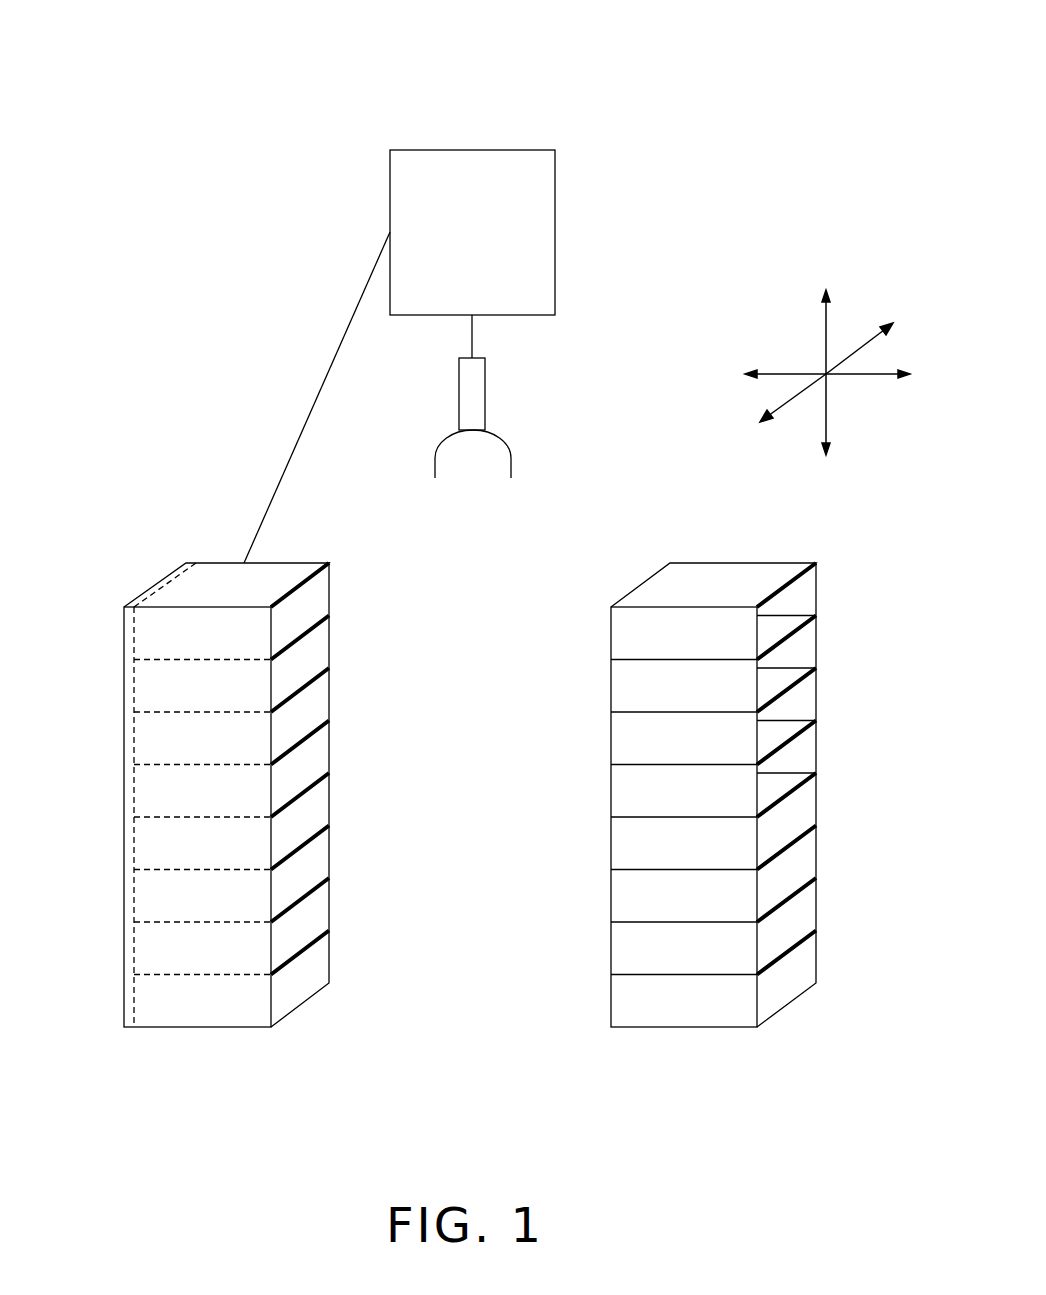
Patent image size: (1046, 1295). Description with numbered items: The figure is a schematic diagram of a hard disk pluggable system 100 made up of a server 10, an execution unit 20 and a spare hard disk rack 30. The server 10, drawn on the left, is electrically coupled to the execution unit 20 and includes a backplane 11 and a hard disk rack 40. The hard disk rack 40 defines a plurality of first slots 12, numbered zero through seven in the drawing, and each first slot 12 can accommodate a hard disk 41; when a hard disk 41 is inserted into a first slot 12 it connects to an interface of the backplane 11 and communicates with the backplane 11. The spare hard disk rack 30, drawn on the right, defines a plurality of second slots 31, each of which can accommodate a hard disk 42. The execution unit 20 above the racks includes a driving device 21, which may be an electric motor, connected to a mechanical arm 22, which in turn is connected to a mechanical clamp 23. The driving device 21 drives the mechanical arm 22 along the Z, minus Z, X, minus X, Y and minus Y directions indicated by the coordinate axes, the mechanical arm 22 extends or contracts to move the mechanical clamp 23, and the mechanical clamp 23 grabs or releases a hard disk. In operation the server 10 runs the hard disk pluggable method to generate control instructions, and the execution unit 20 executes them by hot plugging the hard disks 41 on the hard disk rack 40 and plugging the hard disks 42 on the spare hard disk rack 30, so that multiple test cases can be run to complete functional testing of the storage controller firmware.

The hard disk pluggable system 100 is at (469, 41).
The server 10 is at (162, 595).
The backplane 11 is at (133, 628).
The first slot 12 is at (342, 571).
The execution unit 20 is at (460, 356).
The driving device 21 is at (532, 247).
The mechanical arm 22 is at (478, 396).
The mechanical clamp 23 is at (527, 449).
The spare hard disk rack 30 is at (743, 766).
The second slot 31 is at (826, 783).
The hard disk rack 40 is at (233, 754).
The hard disk 41 is at (344, 970).
The hard disk 42 is at (809, 892).